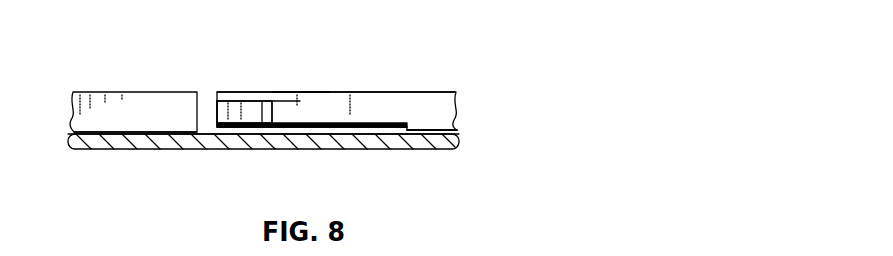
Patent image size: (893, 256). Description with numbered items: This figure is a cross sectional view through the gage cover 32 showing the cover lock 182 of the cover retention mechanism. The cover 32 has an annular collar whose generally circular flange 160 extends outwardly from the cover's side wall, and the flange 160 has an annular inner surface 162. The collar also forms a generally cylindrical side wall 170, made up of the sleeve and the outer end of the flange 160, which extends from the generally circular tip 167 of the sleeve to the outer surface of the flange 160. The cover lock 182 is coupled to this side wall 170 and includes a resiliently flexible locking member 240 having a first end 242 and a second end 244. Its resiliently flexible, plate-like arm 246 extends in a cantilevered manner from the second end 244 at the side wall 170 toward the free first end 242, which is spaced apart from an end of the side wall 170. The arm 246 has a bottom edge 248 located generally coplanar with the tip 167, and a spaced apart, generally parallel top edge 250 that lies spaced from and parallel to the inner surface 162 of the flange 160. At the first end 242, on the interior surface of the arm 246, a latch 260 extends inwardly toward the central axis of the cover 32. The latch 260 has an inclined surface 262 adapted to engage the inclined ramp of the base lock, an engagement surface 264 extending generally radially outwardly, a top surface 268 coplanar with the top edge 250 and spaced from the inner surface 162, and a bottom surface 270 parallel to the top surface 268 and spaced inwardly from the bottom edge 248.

The cover 32 is at (489, 43).
The flange 160 is at (433, 142).
The inner surface 162 is at (452, 131).
The tip 167 is at (88, 92).
The side wall 170 is at (80, 122).
The cover lock 182 is at (379, 44).
The locking member 240 is at (316, 102).
The first end 242 is at (236, 112).
The second end 244 is at (402, 103).
The arm 246 is at (338, 102).
The bottom edge 248 is at (252, 100).
The top edge 250 is at (346, 128).
The latch 260 is at (295, 88).
The inclined surface 262 is at (228, 113).
The engagement surface 264 is at (272, 112).
The top surface 268 is at (241, 128).
The bottom surface 270 is at (248, 113).